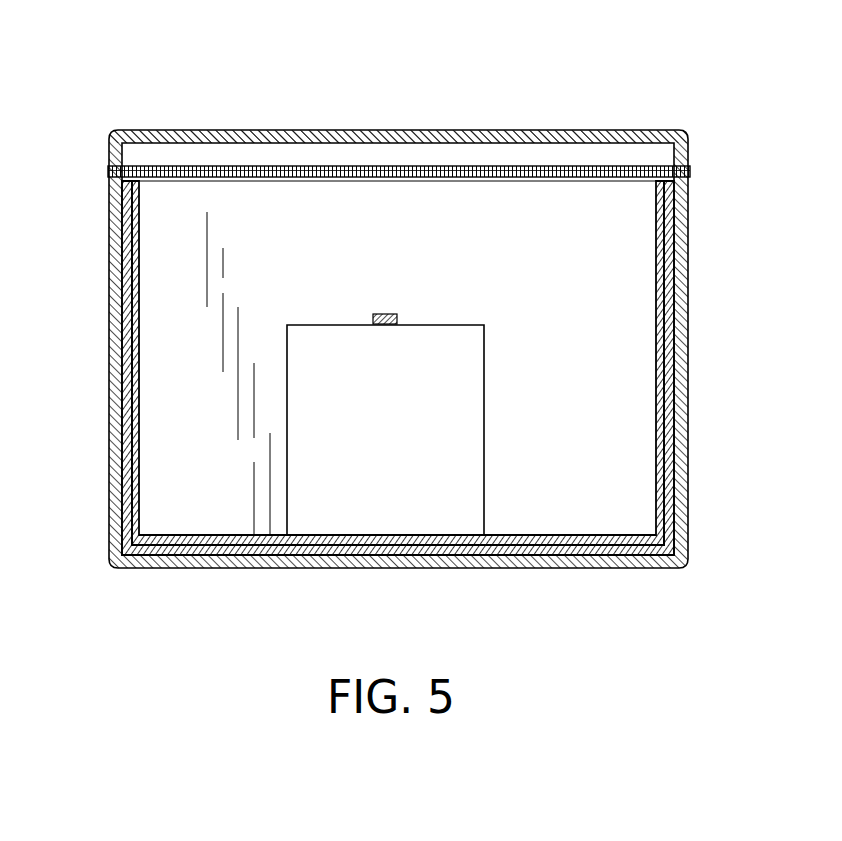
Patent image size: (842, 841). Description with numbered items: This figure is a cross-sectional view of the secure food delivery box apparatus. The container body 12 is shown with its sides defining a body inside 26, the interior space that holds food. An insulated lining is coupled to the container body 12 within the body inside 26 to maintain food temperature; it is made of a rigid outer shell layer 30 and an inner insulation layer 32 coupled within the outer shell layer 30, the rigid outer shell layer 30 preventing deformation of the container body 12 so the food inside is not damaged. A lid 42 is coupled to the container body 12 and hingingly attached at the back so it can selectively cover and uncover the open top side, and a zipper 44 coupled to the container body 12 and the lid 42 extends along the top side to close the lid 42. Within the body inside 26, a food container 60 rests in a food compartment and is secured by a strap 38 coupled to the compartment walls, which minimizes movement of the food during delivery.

The container body 12 is at (683, 395).
The body inside 26 is at (615, 463).
The rigid outer shell layer 30 is at (672, 262).
The inner insulation layer 32 is at (683, 319).
The strap 38 is at (385, 324).
The lid 42 is at (562, 128).
The zipper 44 is at (290, 176).
The food container 60 is at (442, 515).